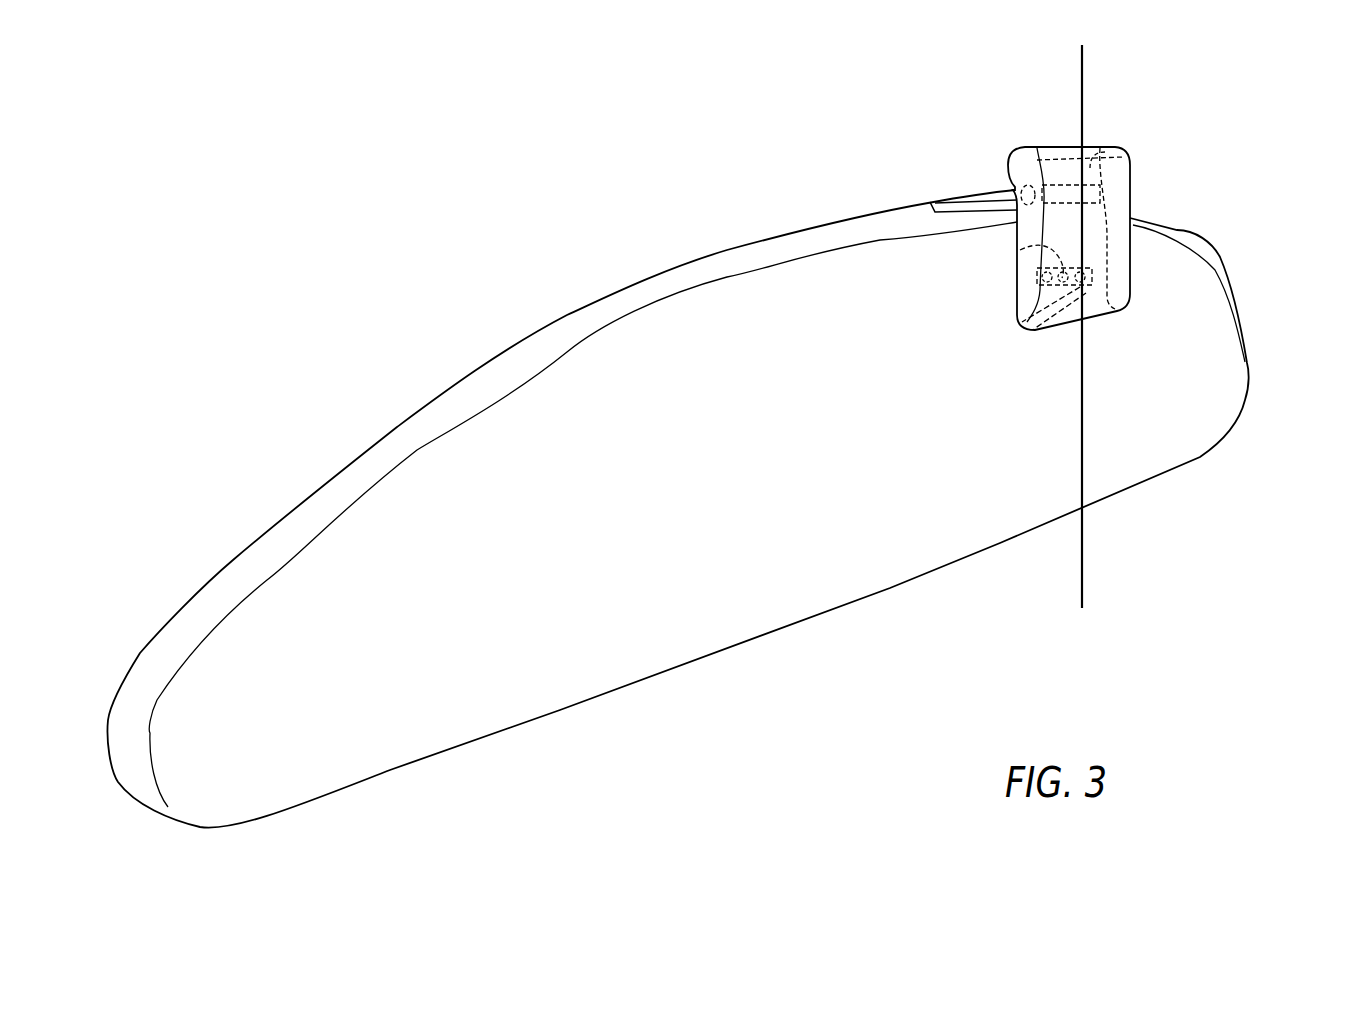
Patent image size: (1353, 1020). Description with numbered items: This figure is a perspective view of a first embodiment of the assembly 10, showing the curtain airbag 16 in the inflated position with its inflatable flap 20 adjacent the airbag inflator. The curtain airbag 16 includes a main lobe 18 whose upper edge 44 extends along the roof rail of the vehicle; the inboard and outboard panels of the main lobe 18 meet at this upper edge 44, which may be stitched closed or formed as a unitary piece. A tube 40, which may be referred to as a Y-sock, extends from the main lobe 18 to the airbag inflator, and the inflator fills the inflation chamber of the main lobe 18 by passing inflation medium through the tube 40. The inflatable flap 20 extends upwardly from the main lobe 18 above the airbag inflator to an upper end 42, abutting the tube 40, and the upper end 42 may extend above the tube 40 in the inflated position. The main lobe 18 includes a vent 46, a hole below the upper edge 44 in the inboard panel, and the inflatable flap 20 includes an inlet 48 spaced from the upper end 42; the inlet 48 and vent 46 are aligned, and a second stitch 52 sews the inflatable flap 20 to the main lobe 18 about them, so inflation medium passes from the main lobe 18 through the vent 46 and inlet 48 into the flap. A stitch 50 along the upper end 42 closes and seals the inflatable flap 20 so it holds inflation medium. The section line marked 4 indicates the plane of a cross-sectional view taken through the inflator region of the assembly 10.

The assembly 10 is at (630, 173).
The curtain airbag 16 is at (743, 645).
The main lobe 18 is at (1190, 428).
The inflatable flap 20 is at (1125, 190).
The tube 40 is at (965, 195).
The upper end 42 is at (1043, 148).
The upper edge 44 is at (815, 240).
The vent 46 is at (1018, 324).
The inlet 48 is at (1026, 330).
The stitch 50 is at (1095, 160).
The second stitch 52 is at (1030, 247).
The section line 4- 4 is at (1017, 73).